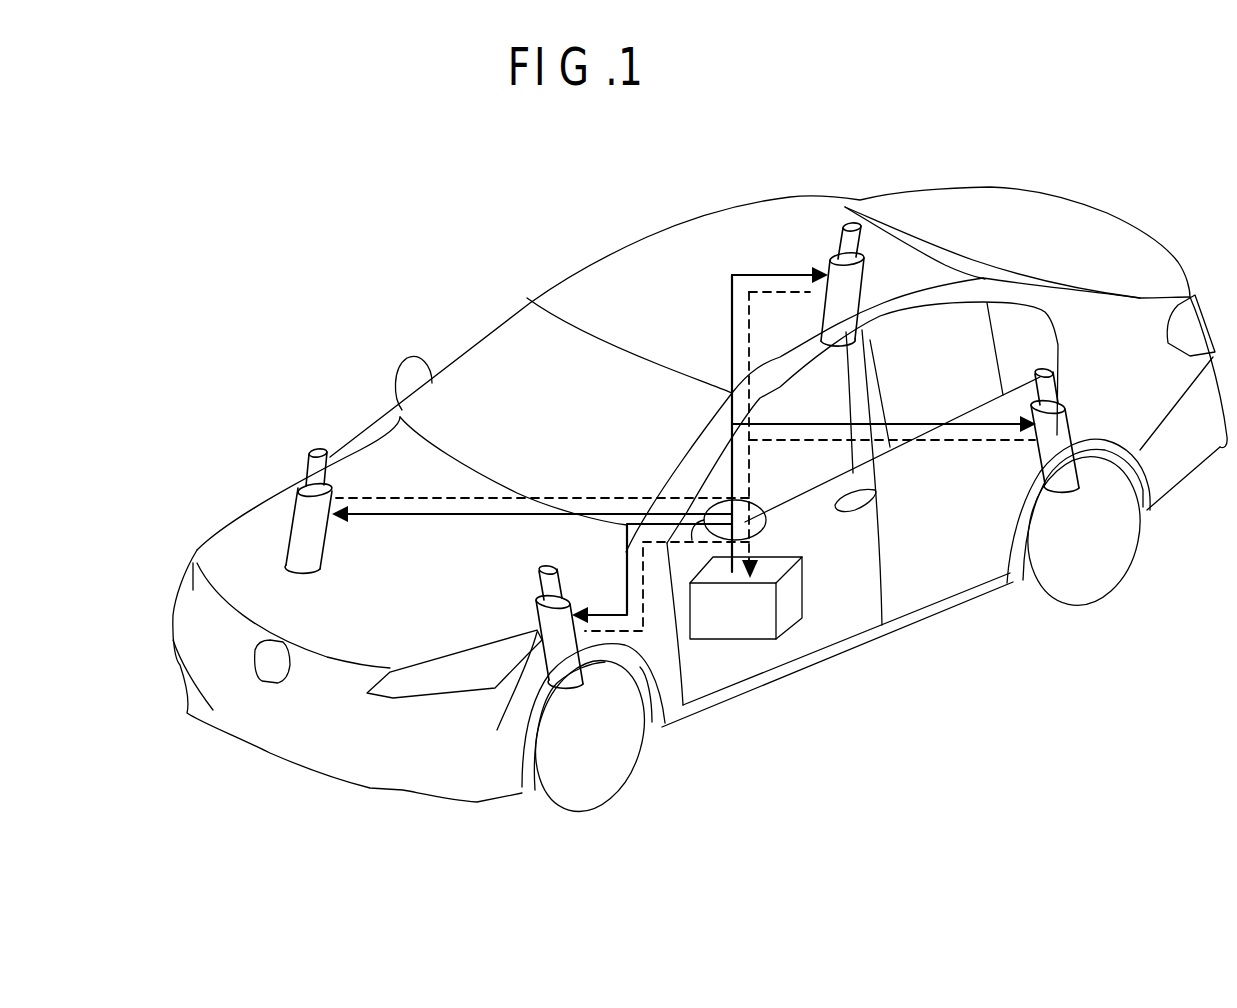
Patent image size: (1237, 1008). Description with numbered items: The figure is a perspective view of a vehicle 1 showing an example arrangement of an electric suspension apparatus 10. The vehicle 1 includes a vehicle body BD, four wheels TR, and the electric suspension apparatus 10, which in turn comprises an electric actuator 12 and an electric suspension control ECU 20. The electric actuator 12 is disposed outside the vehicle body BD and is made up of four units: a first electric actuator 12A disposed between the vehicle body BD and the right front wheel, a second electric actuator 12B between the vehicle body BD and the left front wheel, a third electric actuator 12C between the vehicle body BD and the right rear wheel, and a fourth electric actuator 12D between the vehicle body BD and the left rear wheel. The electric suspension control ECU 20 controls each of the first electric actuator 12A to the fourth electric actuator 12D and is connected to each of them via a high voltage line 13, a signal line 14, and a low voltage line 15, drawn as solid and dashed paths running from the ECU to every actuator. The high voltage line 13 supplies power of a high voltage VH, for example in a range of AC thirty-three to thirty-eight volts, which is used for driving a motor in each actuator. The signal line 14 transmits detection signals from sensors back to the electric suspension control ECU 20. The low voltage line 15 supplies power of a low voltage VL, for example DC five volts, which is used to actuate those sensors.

The vehicle 1 is at (796, 115).
The electric suspension apparatus 10 is at (623, 413).
The electric actuator 12 is at (679, 499).
The first electric actuator 12A is at (287, 533).
The second electric actuator 12B is at (543, 667).
The third electric actuator 12C is at (874, 285).
The fourth electric actuator 12D is at (1077, 423).
The high voltage line 13 is at (810, 427).
The signal line 14 is at (940, 447).
The low voltage line 15 is at (685, 461).
The electric suspension control ECU 20 is at (734, 643).
The vehicle body BD is at (628, 194).
The wheel TR is at (585, 787).
The high voltage VH is at (684, 445).
The low voltage VL is at (685, 461).